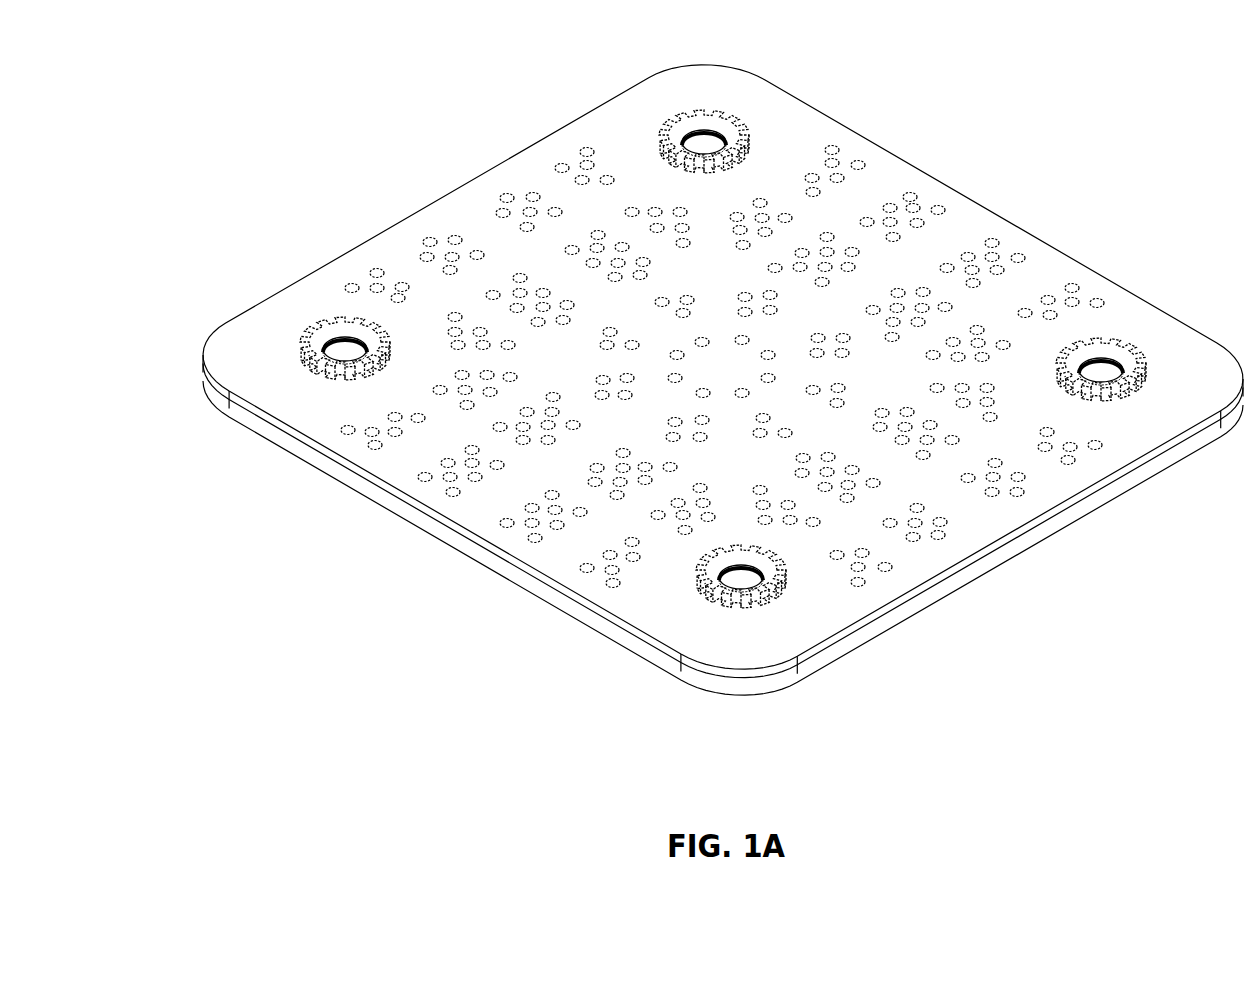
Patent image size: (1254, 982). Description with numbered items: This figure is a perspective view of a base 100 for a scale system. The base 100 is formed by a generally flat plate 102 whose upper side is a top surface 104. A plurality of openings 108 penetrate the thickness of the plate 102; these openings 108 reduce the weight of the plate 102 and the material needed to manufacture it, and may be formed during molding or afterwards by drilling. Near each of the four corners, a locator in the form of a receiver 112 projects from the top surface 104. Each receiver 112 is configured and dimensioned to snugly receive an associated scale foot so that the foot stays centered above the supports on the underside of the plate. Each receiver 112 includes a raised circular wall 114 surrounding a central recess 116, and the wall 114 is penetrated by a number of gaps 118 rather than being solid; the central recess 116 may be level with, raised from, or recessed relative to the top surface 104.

The base 100 is at (295, 170).
The plate 102 is at (1188, 328).
The top surface 104 is at (473, 508).
The openings 108 is at (372, 447).
The receivers 112 is at (672, 112).
The raised circular wall 114 is at (323, 375).
The central recess 116 is at (345, 352).
The gaps 118 is at (310, 337).